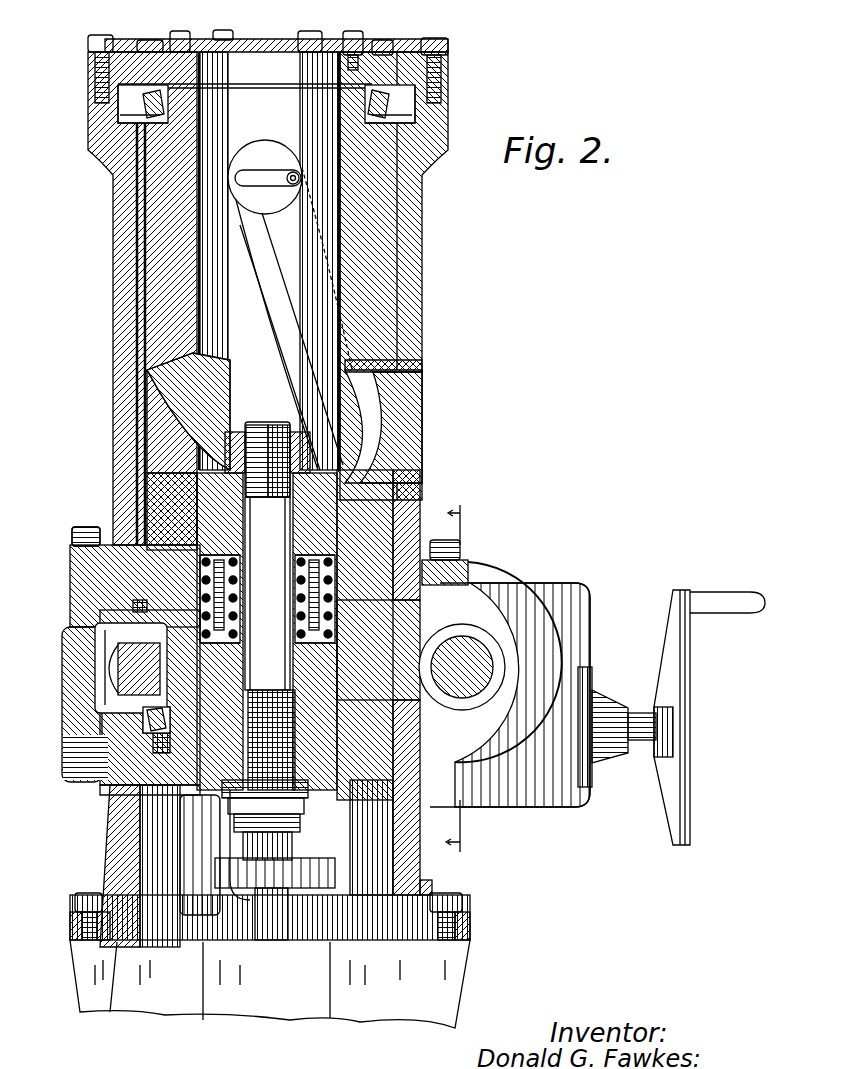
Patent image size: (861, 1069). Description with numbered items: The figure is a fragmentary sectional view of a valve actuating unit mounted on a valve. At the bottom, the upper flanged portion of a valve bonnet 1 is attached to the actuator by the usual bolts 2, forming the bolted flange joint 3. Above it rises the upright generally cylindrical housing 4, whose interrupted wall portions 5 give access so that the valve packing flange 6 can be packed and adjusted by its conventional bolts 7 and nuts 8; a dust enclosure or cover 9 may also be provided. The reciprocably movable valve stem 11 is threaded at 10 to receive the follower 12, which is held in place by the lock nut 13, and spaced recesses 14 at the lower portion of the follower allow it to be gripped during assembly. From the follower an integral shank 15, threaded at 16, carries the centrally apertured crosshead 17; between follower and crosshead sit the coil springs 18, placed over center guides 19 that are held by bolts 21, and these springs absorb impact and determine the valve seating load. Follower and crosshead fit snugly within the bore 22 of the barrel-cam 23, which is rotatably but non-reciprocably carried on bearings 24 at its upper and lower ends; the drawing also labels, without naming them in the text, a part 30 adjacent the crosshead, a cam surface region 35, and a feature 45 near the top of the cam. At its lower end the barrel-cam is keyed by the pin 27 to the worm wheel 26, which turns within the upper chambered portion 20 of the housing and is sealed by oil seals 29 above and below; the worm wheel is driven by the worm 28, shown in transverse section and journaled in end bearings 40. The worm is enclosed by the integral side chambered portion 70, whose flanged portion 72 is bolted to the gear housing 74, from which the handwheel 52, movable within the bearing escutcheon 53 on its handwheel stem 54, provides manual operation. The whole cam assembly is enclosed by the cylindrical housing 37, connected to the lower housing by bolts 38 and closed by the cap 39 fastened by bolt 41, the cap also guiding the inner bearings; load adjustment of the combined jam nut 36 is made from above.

The upper fragmentary flanged portion of a valve bonnet 1 is at (130, 975).
The bolts 2 is at (75, 902).
The bolted flange joint 3 is at (110, 955).
The housing 4 is at (110, 872).
The interrupted wall portions 5 is at (180, 853).
The valve packing flange 6 is at (292, 845).
The bolts 7 is at (258, 898).
The nuts 8 is at (330, 872).
The enclosure or cover 9 is at (200, 915).
The threaded portion of the stem 10 is at (304, 808).
The valve stem 11 is at (300, 824).
The follower 12 is at (190, 800).
The lock nut 13 is at (310, 790).
The recesses 14 is at (205, 772).
The shank or extension 15 is at (267, 593).
The threaded upper portion of the shank 16 is at (268, 420).
The crosshead 17 is at (383, 382).
The coil springs 18 is at (195, 545).
The center guides 19 is at (200, 560).
The upper chambered portion 20 is at (98, 660).
The bolts 21 is at (180, 560).
The bore 22 is at (332, 166).
The barrel-cam 23 is at (140, 265).
The bearings 24 is at (118, 108).
The worm wheel 26 is at (100, 640).
The pin 27 is at (150, 715).
The worm 28 is at (470, 640).
The oil seals 29 is at (135, 605).
The nut 30 is at (240, 430).
The cam 35 is at (165, 413).
The combined jam nut 36 is at (270, 143).
The cylindrical housing 37 is at (113, 310).
The bolts 38 is at (72, 536).
The cap 39 is at (140, 48).
The end bearings 40 is at (247, 42).
The bolt 41 is at (88, 44).
The slot 45 is at (265, 188).
The handwheel 52 is at (690, 815).
The bearing escutcheon 53 is at (597, 690).
The handwheel stem 54 is at (640, 713).
The side chambered portion 70 is at (505, 600).
The flanged portion 72 is at (520, 605).
The gear housing 74 is at (578, 610).